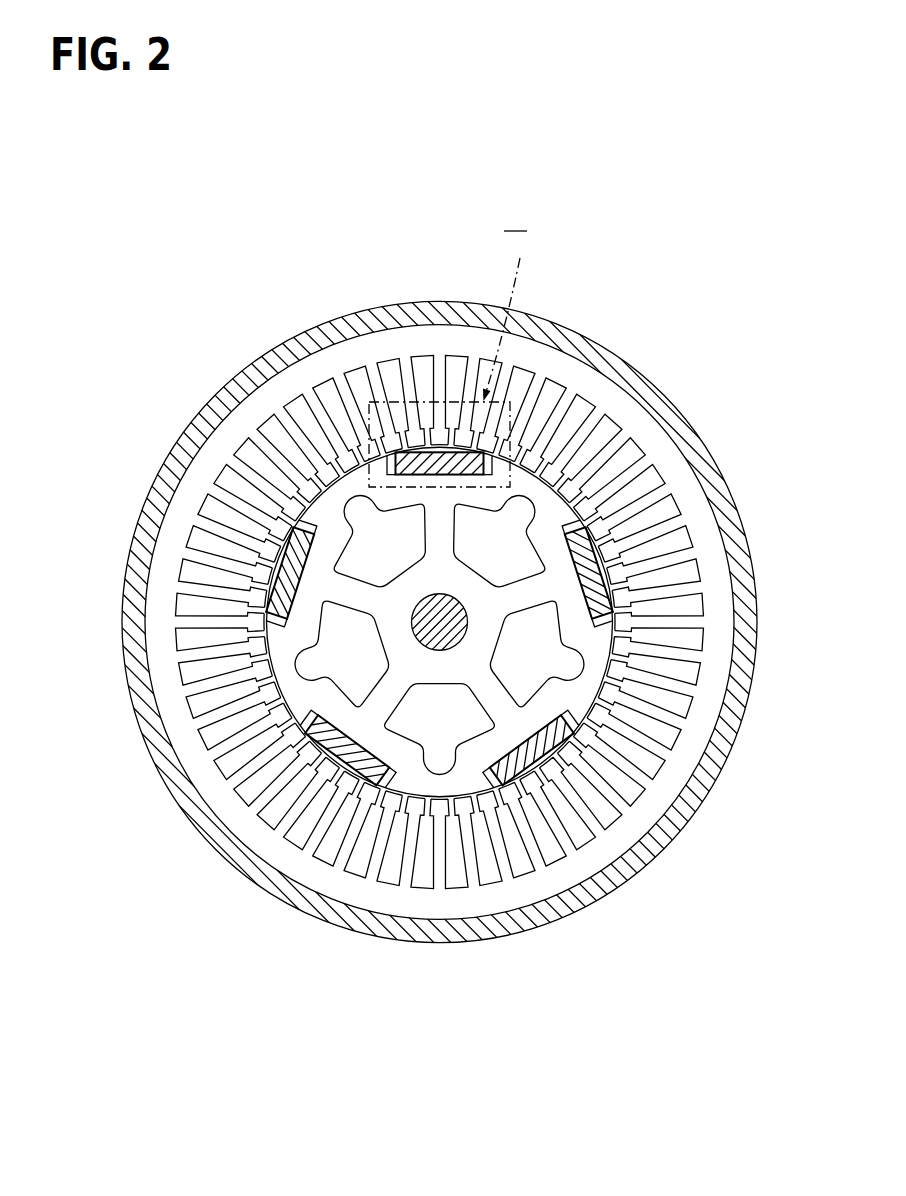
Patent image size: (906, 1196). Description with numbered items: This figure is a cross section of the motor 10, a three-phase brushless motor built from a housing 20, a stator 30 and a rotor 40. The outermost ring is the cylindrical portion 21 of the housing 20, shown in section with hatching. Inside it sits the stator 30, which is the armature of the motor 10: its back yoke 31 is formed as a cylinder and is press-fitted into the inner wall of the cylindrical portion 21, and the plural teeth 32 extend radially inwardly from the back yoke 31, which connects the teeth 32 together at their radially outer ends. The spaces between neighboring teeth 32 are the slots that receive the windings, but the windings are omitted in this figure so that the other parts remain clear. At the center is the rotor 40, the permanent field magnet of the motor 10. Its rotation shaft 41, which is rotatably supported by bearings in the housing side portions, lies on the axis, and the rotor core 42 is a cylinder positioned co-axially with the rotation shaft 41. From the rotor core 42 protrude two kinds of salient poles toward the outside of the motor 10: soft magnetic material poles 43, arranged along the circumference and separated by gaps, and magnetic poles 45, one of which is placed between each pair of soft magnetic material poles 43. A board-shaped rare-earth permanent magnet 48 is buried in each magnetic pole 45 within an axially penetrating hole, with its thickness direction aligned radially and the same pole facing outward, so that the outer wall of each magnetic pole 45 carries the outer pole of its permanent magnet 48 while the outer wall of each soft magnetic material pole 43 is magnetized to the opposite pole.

The motor 10 is at (233, 303).
The housing 20 is at (440, 598).
The cylindrical portion 21 is at (320, 905).
The stator 30 is at (467, 622).
The back yoke 31 is at (687, 480).
The teeth 32 is at (610, 447).
The rotor 40 is at (440, 624).
The rotation shaft 41 is at (472, 640).
The rotor core 42 is at (392, 642).
The soft magnetic material pole 43 is at (338, 482).
The magnetic pole 45 is at (444, 445).
The permanent magnet 48 is at (436, 451).